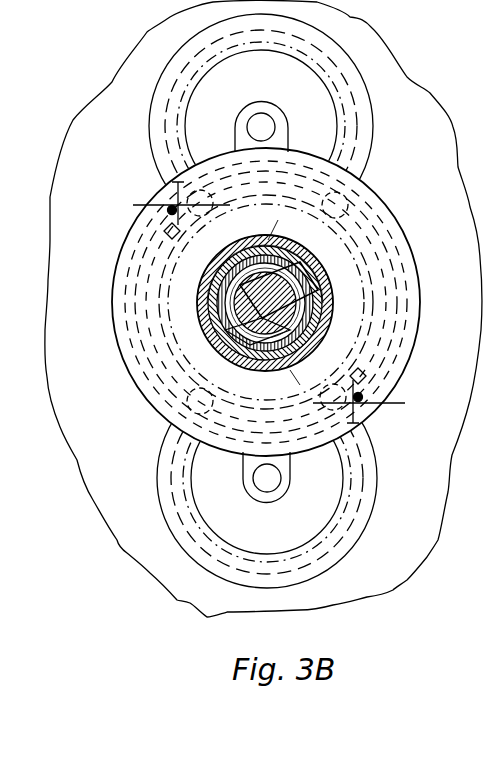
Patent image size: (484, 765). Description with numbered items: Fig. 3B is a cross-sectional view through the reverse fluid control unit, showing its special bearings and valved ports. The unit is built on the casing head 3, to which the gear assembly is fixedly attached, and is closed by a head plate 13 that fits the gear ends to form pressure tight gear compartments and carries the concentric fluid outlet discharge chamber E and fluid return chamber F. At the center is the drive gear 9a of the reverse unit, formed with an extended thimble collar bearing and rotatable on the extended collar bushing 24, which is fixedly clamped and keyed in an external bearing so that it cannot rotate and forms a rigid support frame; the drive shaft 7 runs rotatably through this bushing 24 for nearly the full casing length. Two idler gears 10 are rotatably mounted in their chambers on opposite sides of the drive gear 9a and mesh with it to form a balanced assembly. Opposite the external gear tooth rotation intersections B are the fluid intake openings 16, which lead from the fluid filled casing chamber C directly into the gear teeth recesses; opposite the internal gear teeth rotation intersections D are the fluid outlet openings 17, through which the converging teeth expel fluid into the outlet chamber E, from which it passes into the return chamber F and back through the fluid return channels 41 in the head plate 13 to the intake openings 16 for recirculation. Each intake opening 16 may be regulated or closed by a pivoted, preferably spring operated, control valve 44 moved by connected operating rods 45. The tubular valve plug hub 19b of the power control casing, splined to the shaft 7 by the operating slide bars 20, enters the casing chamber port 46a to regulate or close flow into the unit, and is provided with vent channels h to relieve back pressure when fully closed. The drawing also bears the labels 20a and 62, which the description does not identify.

The casing head 3 is at (120, 517).
The idler gears 10 is at (317, 105).
The head plate 13 is at (360, 523).
The drive gear of the reverse unit 9a is at (338, 265).
The casing chamber port 46a is at (305, 248).
The operating slide bars 20 is at (333, 296).
The valve plug hub 19b is at (333, 312).
The collar bushing 24 is at (225, 315).
The drive shaft 7 is at (213, 330).
The bearing flange 20a is at (200, 270).
The spacer 62 is at (200, 287).
The internal gear teeth rotation intersections D is at (302, 207).
The fluid outlet openings 17 is at (308, 200).
The casing chamber C is at (260, 304).
The vent channels h is at (284, 305).
The fluid return channels 41 is at (180, 195).
The pivoted control valve 44 is at (177, 203).
The operating rods 45 is at (170, 210).
The external gear tooth rotation intersections B is at (270, 303).
The fluid intake openings 16 is at (150, 215).
The outlet discharge chamber E is at (385, 328).
The fluid return chamber F is at (395, 348).